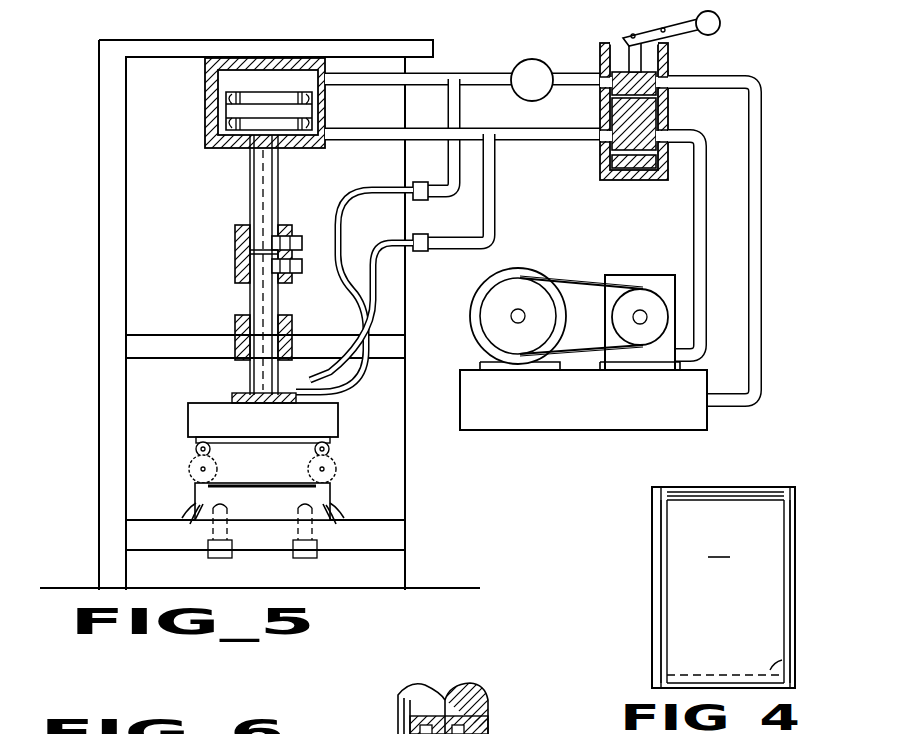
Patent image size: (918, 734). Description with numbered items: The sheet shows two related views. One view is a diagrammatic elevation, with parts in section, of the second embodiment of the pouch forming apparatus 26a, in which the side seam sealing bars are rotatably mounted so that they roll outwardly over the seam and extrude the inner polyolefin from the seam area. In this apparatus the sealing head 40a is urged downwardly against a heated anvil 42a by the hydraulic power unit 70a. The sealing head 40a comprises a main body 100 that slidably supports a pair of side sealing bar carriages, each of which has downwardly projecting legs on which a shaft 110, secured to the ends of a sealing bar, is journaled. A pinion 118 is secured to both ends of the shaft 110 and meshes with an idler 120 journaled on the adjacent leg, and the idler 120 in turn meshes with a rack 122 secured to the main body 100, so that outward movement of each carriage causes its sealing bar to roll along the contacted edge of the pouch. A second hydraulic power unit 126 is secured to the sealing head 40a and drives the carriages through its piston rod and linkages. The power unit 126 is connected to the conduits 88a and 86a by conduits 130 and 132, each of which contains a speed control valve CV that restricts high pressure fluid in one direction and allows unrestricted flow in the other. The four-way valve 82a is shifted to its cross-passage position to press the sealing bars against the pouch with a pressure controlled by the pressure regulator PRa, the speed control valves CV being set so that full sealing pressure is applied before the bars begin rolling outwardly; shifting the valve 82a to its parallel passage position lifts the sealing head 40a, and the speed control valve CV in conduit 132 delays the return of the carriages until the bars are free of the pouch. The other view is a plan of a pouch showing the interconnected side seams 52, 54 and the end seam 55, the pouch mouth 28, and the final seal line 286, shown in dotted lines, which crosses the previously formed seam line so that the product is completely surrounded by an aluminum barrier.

In FIG. 5, the pouch forming apparatus 26a is at (366, 36).
In FIG. 5, the hydraulic power unit 70a is at (210, 60).
In FIG. 5, the hydraulic power unit 126 is at (248, 376).
In FIG. 5, the conduit 88a is at (481, 73).
In FIG. 5, the conduit 86a is at (517, 143).
In FIG. 5, the pressure regulator PRa is at (532, 80).
In FIG. 5, the four-way valve 82a is at (670, 60).
In FIG. 5, the speed control valve CV is at (431, 232).
In FIG. 5, the conduit 130 is at (360, 190).
In FIG. 6, the conduit 130 is at (518, 732).
In FIG. 5, the conduit 132 is at (378, 250).
In FIG. 5, the sealing head 40a is at (334, 412).
In FIG. 5, the main body 100 is at (190, 410).
In FIG. 5, the rack 122 is at (312, 448).
In FIG. 5, the idler 120 is at (194, 449).
In FIG. 5, the pinion 118 is at (189, 469).
In FIG. 5, the shaft 110 is at (318, 469).
In FIG. 5, the anvil 42a is at (194, 495).
In FIG. 4, the mouth 28 is at (692, 666).
In FIG. 4, the end seam 55 is at (700, 498).
In FIG. 4, the side seam 52 is at (663, 548).
In FIG. 4, the side seam 54 is at (786, 548).
In FIG. 4, the seal line 286 is at (784, 660).